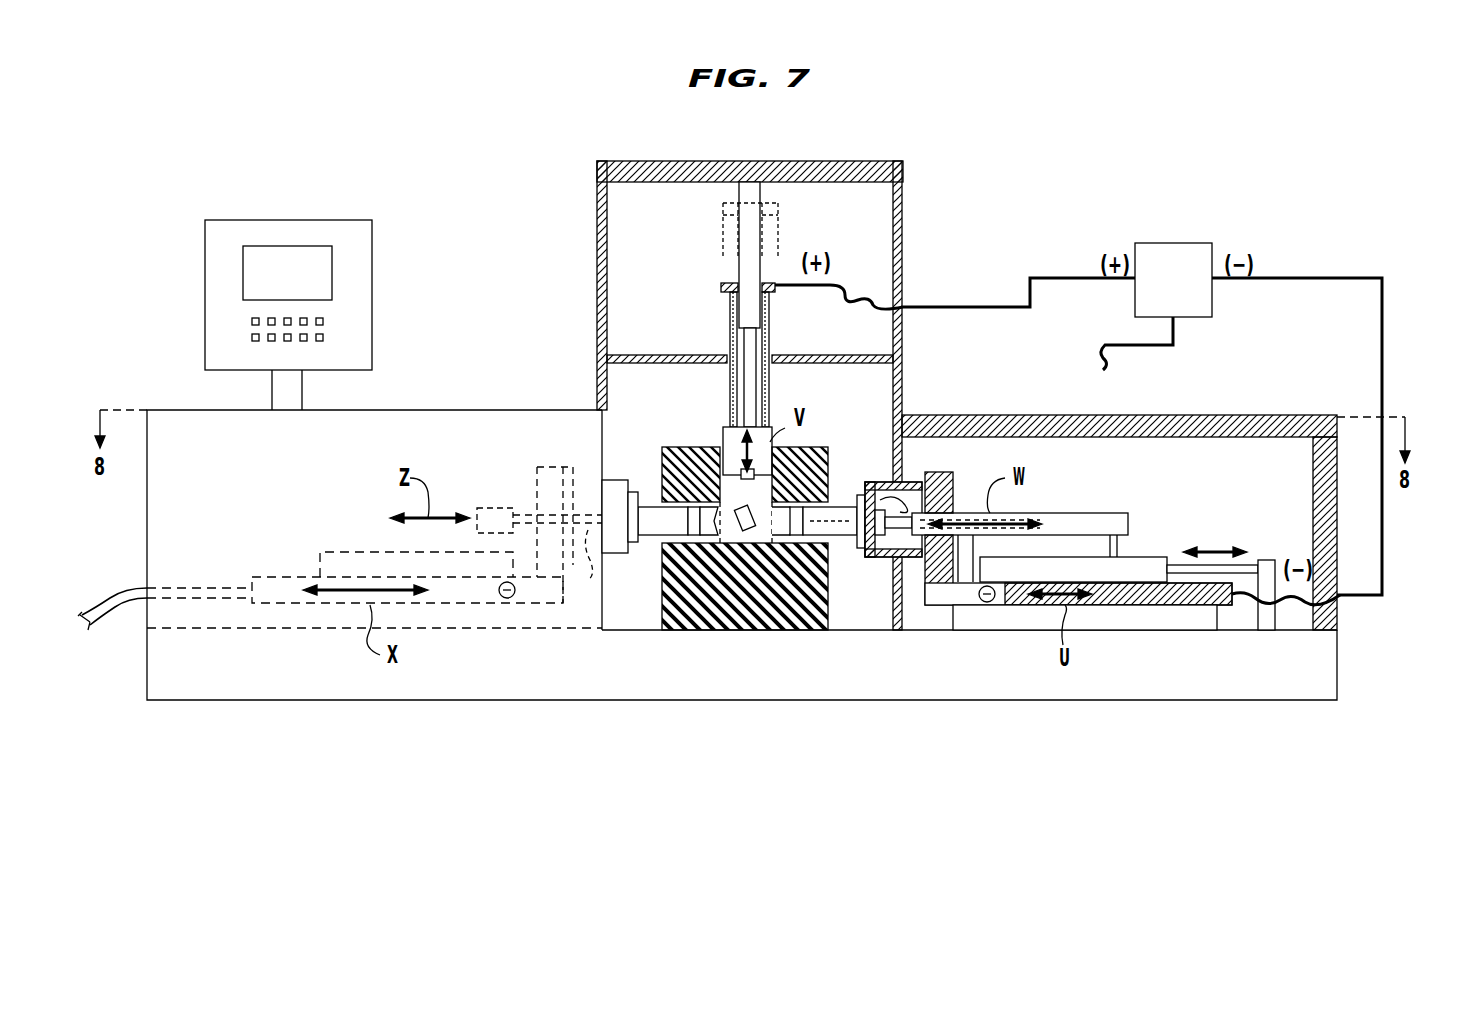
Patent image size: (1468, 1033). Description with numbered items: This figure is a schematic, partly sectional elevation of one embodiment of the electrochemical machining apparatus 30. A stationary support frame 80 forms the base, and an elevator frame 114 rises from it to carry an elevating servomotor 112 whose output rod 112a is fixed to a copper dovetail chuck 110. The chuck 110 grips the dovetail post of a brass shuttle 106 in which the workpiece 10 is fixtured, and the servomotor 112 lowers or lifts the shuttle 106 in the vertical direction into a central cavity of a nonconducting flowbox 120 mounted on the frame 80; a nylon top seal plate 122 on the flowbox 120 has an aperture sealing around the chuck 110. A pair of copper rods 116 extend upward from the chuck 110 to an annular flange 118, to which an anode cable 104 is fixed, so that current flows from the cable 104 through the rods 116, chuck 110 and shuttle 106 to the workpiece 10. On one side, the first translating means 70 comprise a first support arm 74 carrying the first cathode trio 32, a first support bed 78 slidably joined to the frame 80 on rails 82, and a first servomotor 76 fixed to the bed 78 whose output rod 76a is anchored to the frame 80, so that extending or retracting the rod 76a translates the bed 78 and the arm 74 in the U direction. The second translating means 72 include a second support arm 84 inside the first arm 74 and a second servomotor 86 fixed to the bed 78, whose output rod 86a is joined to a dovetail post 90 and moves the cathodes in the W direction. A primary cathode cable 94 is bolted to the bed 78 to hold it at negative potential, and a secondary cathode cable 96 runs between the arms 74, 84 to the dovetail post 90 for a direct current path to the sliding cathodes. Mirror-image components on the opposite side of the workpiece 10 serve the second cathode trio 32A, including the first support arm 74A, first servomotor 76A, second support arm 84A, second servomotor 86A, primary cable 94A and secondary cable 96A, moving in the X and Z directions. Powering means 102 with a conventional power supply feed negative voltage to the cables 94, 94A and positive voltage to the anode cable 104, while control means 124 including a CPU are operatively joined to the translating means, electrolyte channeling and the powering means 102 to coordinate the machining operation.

The workpiece 10 is at (728, 520).
The apparatus 30 is at (118, 571).
The first cathode trio 32 is at (826, 512).
The second cathode trio 32A is at (684, 520).
The first translating means 70 is at (928, 612).
The second translating means 72 is at (1120, 497).
The first support arm 74 is at (843, 540).
The first support arm (mirror) 74A is at (640, 480).
The first servomotor 76 is at (1155, 557).
The first servomotor (mirror) 76A is at (330, 552).
The output rod 76a is at (1260, 560).
The first support bed 78 is at (1122, 605).
The support frame 80 is at (1345, 672).
The rails 82 is at (1190, 614).
The second support arm 84 is at (855, 500).
The second support arm (mirror) 84A is at (573, 467).
The second servomotor 86 is at (1068, 513).
The second servomotor (mirror) 86A is at (495, 508).
The output rod 86a is at (905, 478).
The dovetail post 90 is at (895, 557).
The primary cathode electrical cable 94 is at (1382, 520).
The primary cathode electrical cable (mirror) 94A is at (1140, 345).
The secondary cathode electrical cable 96 is at (878, 482).
The secondary cathode electrical cable (mirror) 96A is at (582, 567).
The powering means 102 is at (1175, 243).
The anode cable 104 is at (993, 307).
The shuttle 106 is at (748, 540).
The dovetail chuck 110 is at (723, 448).
The elevating servomotor 112 is at (760, 190).
The output rod 112a is at (756, 370).
The elevator frame 114 is at (597, 240).
The copper rods 116 is at (730, 345).
The annular flange 118 is at (721, 285).
The flowbox 120 is at (755, 630).
The top seal plate 122 is at (800, 445).
The control means 124 is at (372, 270).